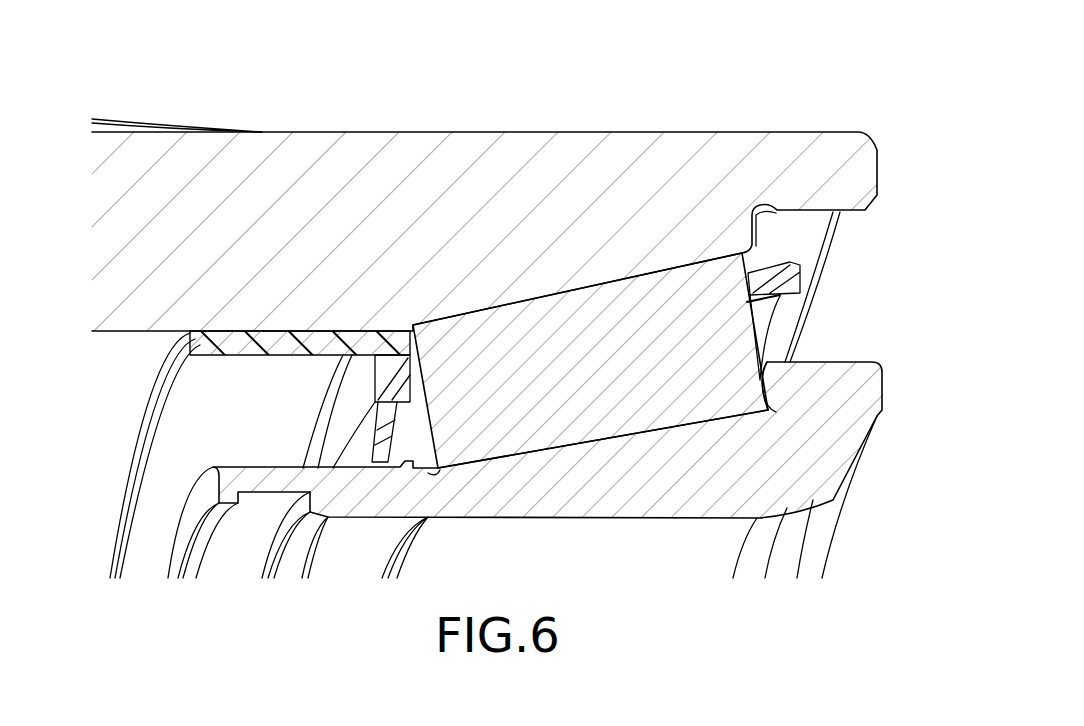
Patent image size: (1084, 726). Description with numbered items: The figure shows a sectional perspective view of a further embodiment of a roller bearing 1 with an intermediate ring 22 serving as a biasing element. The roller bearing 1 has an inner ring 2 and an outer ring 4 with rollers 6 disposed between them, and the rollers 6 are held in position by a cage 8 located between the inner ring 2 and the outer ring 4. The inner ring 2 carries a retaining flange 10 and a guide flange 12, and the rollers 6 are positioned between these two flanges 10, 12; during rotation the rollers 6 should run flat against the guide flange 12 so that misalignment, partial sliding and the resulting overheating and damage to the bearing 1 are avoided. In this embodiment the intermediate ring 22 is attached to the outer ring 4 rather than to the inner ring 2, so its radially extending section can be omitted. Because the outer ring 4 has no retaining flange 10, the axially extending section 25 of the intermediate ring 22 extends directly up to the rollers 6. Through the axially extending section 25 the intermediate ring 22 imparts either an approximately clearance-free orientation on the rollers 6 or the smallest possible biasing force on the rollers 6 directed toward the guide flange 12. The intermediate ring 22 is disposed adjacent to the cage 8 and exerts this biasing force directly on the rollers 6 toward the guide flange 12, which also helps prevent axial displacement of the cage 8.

The roller bearing 1 is at (832, 108).
The inner ring 2 is at (563, 497).
The outer ring 4 is at (518, 157).
The rollers 6 is at (640, 413).
The cage 8 is at (392, 386).
The retaining flange 10 is at (428, 475).
The guide flange 12 is at (770, 397).
The intermediate ring 22 is at (203, 357).
The axially extending section 25 is at (250, 345).